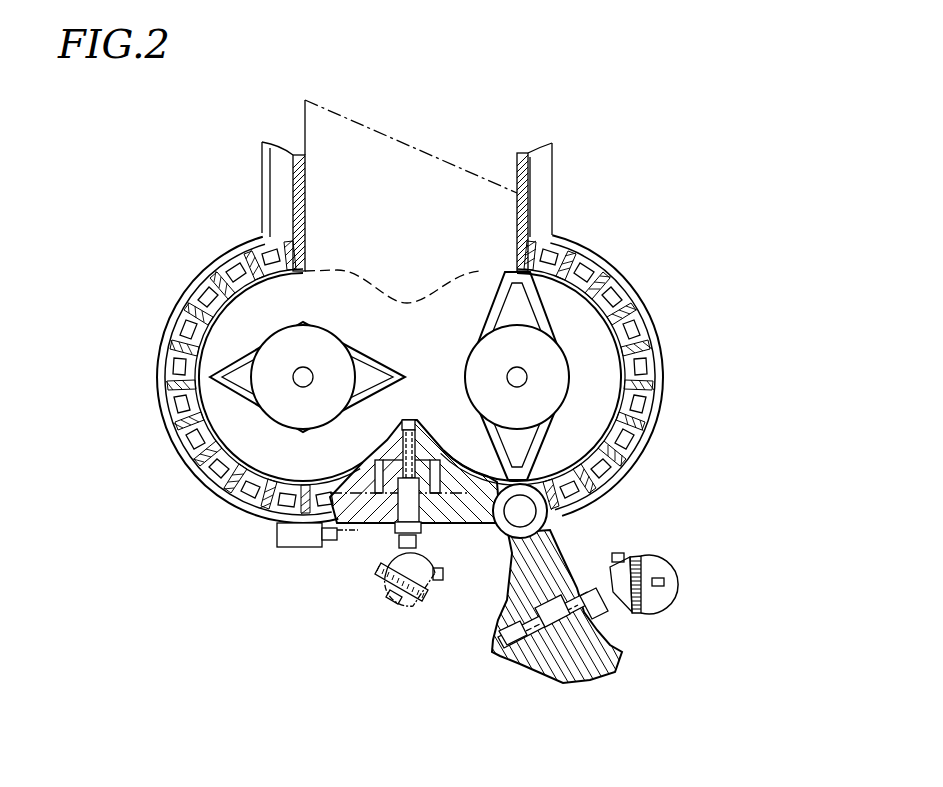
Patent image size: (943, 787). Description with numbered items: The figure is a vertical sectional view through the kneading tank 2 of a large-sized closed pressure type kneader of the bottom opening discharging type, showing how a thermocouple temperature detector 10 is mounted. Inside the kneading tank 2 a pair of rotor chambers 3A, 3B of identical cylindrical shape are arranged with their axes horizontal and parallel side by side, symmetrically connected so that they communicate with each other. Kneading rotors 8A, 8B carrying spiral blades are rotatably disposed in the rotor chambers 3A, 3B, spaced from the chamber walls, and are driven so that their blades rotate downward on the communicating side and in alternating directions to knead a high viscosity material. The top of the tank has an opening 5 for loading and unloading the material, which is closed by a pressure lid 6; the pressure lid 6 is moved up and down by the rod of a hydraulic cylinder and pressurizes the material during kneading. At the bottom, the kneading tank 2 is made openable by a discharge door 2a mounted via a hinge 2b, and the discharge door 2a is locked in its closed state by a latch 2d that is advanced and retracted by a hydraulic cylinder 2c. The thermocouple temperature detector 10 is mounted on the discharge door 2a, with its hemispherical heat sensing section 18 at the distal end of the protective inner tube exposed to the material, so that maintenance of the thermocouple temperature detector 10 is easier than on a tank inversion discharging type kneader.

The kneading tank 2 is at (441, 335).
The discharge door 2a is at (369, 515).
The hinge 2b is at (547, 516).
The hydraulic cylinder 2c is at (277, 535).
The latch 2d is at (331, 541).
The rotor chamber 3A is at (324, 314).
The rotor chamber 3B is at (474, 325).
The opening 5 is at (305, 197).
The pressure lid 6 is at (430, 158).
The kneading rotor 8A is at (228, 434).
The kneading rotor 8B is at (603, 386).
The thermocouple temperature detector 10 is at (547, 600).
The heat sensing section 18 is at (410, 418).